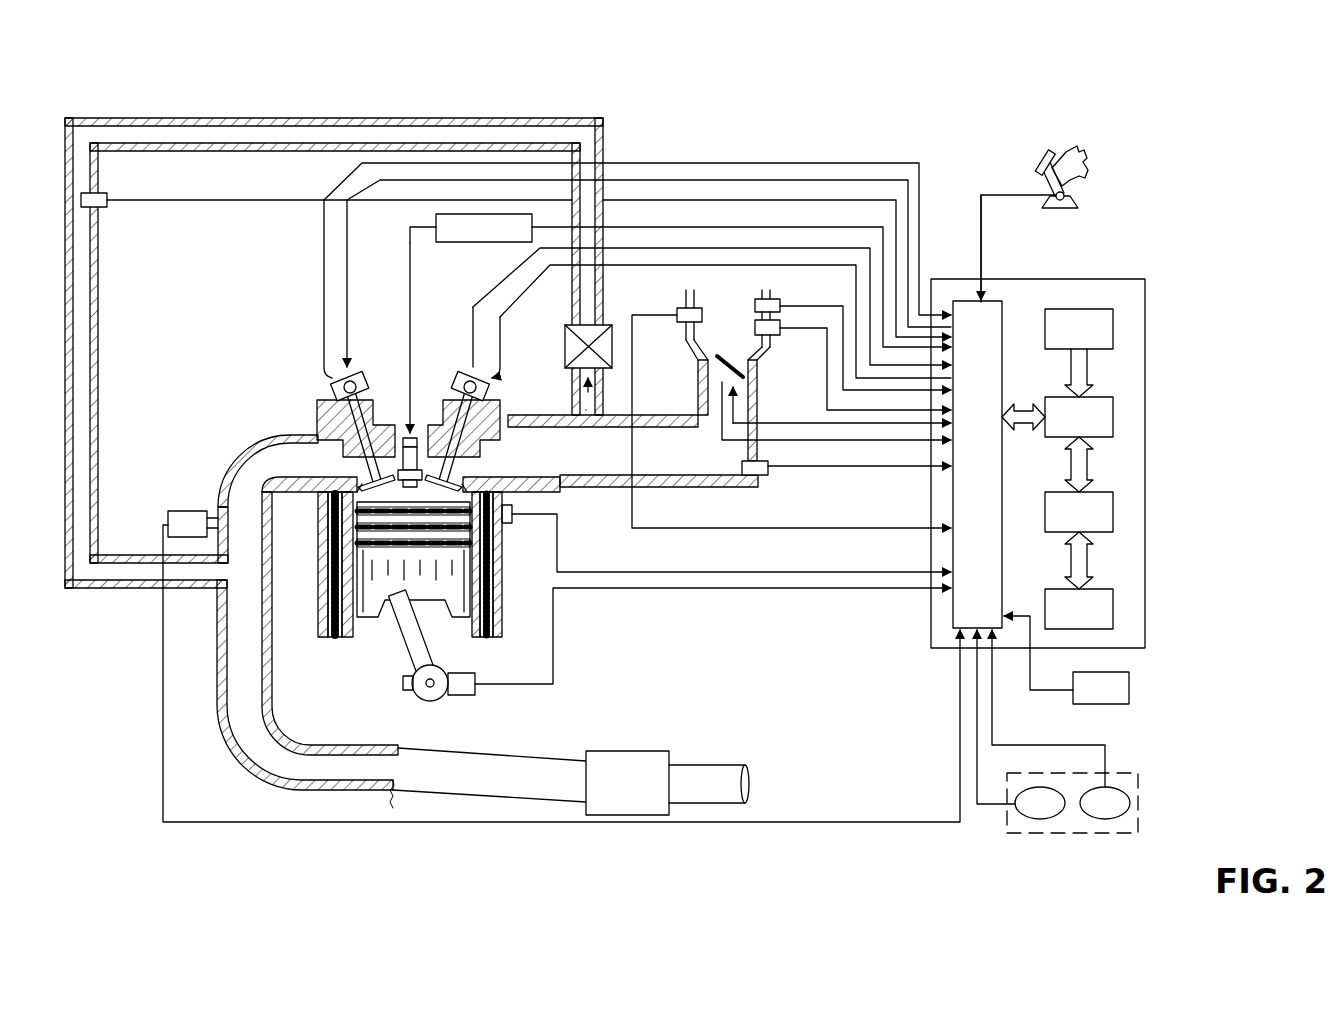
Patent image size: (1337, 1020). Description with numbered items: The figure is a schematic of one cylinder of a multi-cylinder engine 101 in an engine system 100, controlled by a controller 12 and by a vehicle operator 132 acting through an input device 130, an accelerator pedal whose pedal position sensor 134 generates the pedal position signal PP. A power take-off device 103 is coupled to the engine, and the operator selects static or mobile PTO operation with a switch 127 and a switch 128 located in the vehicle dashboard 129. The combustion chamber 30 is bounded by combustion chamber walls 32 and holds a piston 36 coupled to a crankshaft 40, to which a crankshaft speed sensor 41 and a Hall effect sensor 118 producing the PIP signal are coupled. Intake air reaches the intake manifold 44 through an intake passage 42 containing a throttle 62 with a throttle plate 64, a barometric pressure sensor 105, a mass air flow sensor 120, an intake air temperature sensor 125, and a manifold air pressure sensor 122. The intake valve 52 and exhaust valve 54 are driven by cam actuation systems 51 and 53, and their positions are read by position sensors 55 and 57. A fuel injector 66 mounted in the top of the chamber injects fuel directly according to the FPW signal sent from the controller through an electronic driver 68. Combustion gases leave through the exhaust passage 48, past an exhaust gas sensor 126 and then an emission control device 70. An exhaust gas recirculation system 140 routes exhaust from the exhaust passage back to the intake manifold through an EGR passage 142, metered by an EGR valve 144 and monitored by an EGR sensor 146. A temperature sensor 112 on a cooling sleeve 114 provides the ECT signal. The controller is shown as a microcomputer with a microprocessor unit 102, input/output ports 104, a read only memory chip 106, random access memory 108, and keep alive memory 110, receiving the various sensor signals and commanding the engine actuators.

The controller 12 is at (1145, 282).
The combustion chamber 30 is at (330, 592).
The combustion chamber walls 32 is at (356, 640).
The piston 36 is at (393, 610).
The crankshaft 40 is at (420, 700).
The crankshaft speed sensor 41 is at (402, 689).
The intake passage 42 is at (716, 351).
The intake manifold 44 is at (655, 465).
The exhaust passage 48 is at (276, 470).
The cam actuation system 51 is at (470, 370).
The intake valve 52 is at (458, 467).
The cam actuation system 53 is at (352, 370).
The exhaust valve 54 is at (345, 445).
The position sensor 55 is at (485, 392).
The position sensor 57 is at (337, 390).
The throttle 62 is at (745, 370).
The throttle plate 64 is at (715, 362).
The fuel injector 66 is at (412, 435).
The electronic driver 68 is at (512, 243).
The emission control device 70 is at (667, 783).
The engine system 100 is at (1237, 155).
The engine 101 is at (256, 358).
The microprocessor unit 102 is at (1113, 412).
The power take-off device 103 is at (1066, 660).
The input/output ports 104 is at (1002, 310).
The barometric pressure sensor 105 is at (677, 314).
The read only memory chip 106 is at (1113, 322).
The random access memory 108 is at (1113, 507).
The keep alive memory 110 is at (1113, 605).
The temperature sensor 112 is at (512, 523).
The cooling sleeve 114 is at (490, 592).
The Hall effect sensor 118 is at (462, 695).
The mass air flow sensor 120 is at (758, 300).
The manifold air pressure sensor 122 is at (765, 476).
The intake air temperature sensor 125 is at (756, 326).
The exhaust gas sensor 126 is at (168, 514).
The switch 127 is at (1050, 820).
The switch 128 is at (1120, 820).
The vehicle dashboard 129 is at (1138, 825).
The input device 130 is at (1040, 175).
The vehicle operator 132 is at (1090, 160).
The pedal position sensor 134 is at (1068, 196).
The exhaust gas recirculation system 140 is at (470, 110).
The EGR passage 142 is at (345, 118).
The EGR valve 144 is at (565, 349).
The EGR sensor 146 is at (104, 207).